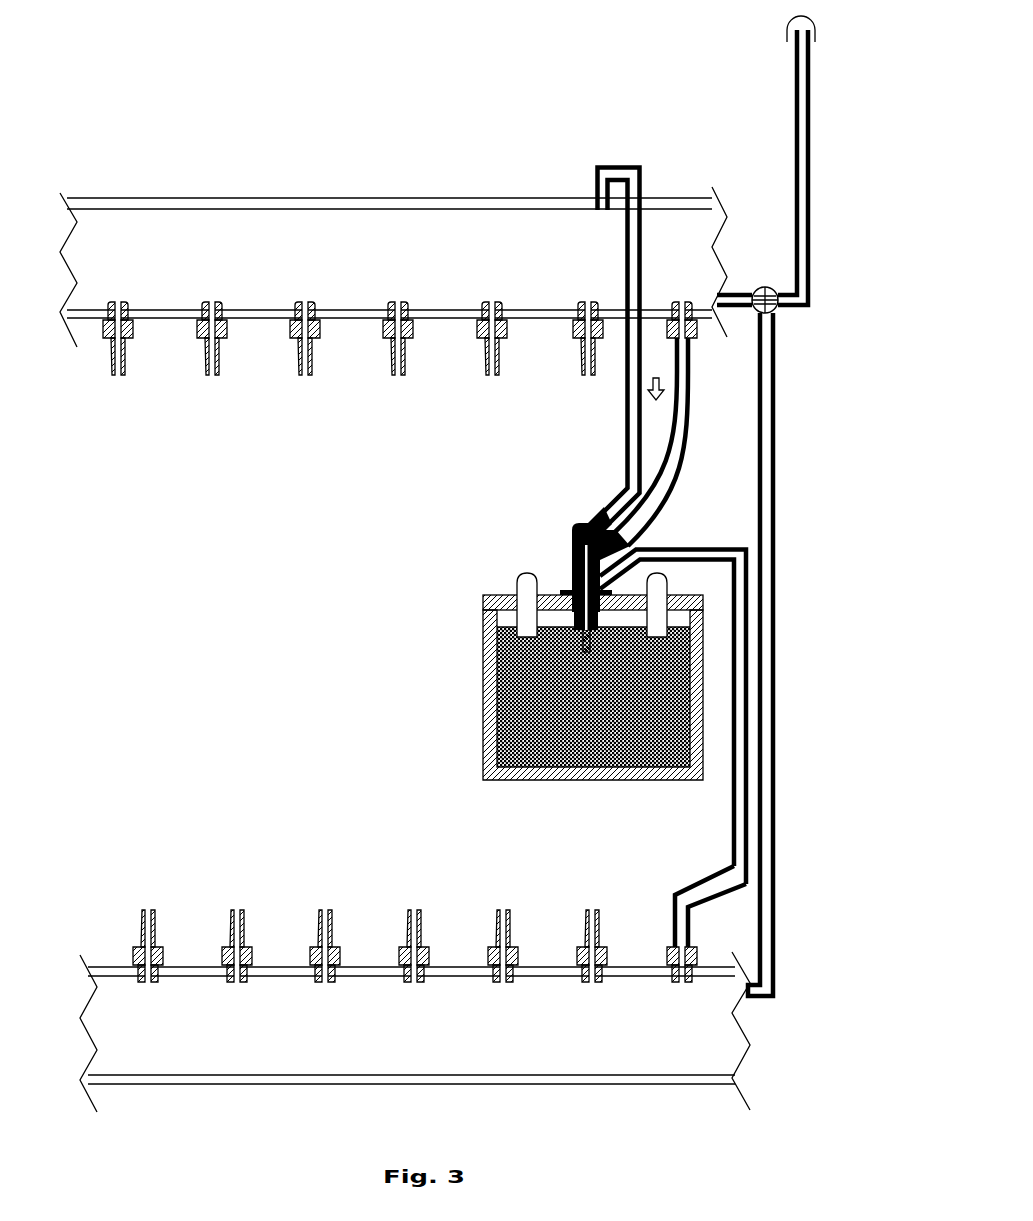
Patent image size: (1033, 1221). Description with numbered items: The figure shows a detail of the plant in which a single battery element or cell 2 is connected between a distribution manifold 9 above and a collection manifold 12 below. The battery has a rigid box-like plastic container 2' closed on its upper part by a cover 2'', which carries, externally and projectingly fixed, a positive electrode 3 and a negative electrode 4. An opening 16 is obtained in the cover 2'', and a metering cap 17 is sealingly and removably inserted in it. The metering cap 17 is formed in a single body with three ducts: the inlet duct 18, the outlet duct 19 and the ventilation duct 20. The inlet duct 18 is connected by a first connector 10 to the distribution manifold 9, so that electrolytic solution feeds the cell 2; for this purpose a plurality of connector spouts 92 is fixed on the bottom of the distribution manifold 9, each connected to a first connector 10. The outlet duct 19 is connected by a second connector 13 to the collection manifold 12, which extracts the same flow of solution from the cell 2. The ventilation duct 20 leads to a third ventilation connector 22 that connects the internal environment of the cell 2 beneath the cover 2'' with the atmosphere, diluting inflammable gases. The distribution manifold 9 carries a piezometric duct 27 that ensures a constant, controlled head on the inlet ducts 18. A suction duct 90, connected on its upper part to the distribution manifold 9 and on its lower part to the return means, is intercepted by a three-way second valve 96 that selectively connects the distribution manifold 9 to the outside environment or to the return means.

The cell 2 is at (573, 635).
The rigid container 2' is at (563, 695).
The cover 2'' is at (564, 599).
The positive electrode 3 is at (518, 580).
The negative electrode 4 is at (666, 583).
The distribution manifold 9 is at (180, 233).
The first connector 10 is at (667, 480).
The collection manifold 12 is at (125, 990).
The second connector 13 is at (733, 855).
The opening 16 is at (556, 594).
The metering cap 17 is at (565, 511).
The inlet duct 18 is at (600, 522).
The outlet duct 19 is at (613, 587).
The ventilation duct 20 is at (613, 528).
The third ventilation connector 22 is at (627, 412).
The piezometric duct 27 is at (795, 118).
The suction duct 90 is at (768, 490).
The connector spout 92 is at (226, 279).
The second valve 96 is at (765, 286).